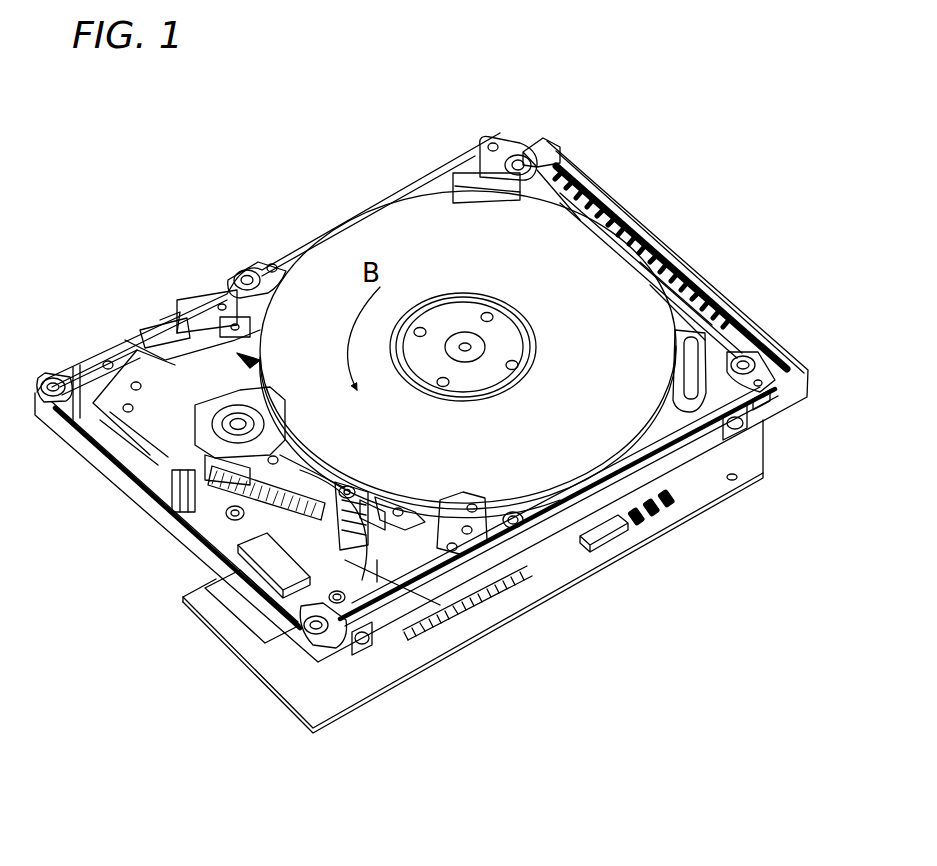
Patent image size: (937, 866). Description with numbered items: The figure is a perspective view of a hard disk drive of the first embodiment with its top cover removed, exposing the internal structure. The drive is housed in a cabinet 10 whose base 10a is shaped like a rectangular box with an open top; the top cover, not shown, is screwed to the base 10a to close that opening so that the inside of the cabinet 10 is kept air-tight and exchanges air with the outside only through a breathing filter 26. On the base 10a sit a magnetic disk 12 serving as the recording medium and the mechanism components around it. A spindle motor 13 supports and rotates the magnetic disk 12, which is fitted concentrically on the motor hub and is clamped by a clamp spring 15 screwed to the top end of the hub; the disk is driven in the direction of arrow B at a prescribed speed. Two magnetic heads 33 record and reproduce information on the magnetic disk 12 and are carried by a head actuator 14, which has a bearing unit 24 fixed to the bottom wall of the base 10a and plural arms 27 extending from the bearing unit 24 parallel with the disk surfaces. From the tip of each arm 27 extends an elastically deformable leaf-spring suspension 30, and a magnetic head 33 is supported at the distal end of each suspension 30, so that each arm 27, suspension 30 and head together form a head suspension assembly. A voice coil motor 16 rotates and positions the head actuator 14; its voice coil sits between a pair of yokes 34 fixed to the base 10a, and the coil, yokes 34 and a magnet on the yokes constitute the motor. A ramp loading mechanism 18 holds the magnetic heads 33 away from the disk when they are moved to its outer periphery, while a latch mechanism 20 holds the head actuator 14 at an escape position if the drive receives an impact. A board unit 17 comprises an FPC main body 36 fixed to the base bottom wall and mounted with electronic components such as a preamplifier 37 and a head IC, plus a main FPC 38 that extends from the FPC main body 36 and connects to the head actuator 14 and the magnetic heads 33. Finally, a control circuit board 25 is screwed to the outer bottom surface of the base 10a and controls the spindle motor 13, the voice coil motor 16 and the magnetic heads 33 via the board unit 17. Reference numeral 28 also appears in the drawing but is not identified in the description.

The cabinet 10 is at (452, 153).
The base 10a is at (380, 563).
The magnetic disk 12 is at (385, 232).
The spindle motor 13 is at (548, 347).
The head actuator 14 is at (278, 455).
The clamp spring 15 is at (492, 302).
The voice coil motor 16 is at (141, 348).
The board unit 17 is at (214, 530).
The ramp loading mechanism 18 is at (503, 620).
The latch mechanism 20 is at (203, 312).
The bearing unit 24 is at (264, 407).
The control circuit board 25 is at (577, 573).
The breathing filter 26 is at (688, 392).
The arm 27 is at (346, 490).
The flexible printed circuit board 28 is at (483, 195).
The suspension 30 is at (398, 512).
The magnetic head 33 is at (470, 538).
The yoke 34 is at (137, 442).
The FPC main body 36 is at (317, 610).
The preamplifier 37 is at (212, 625).
The main FPC 38 is at (267, 557).